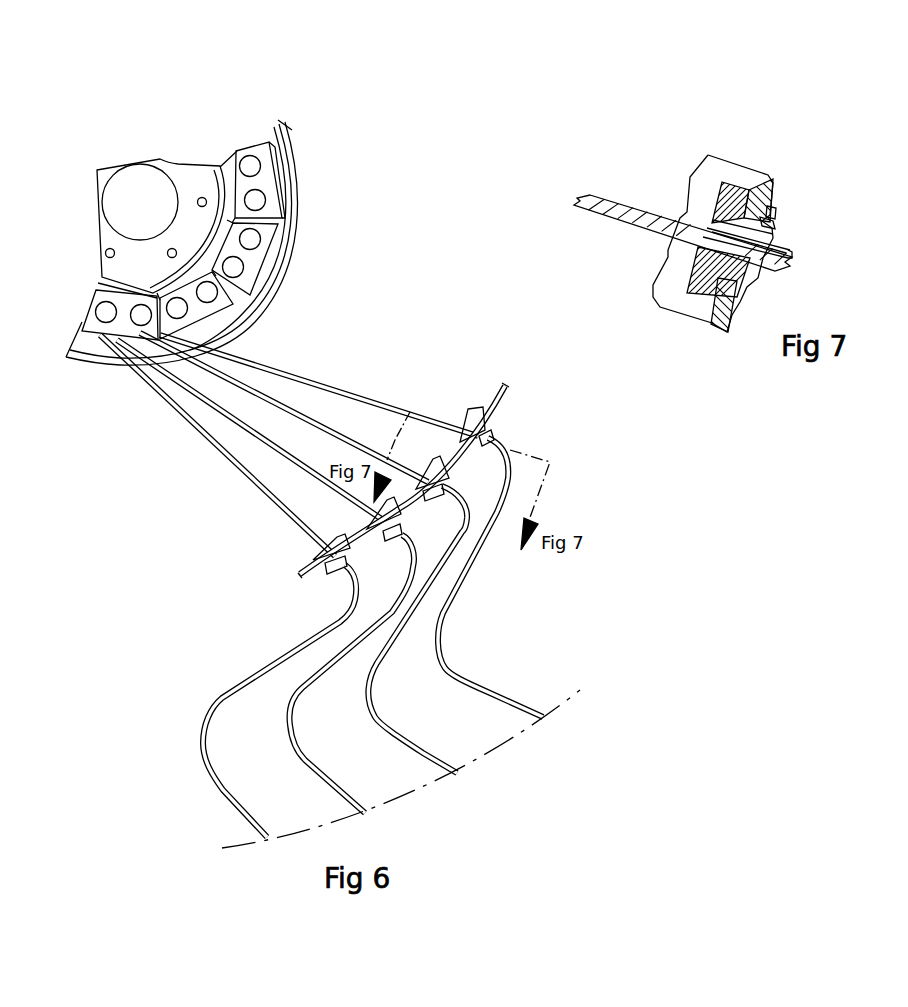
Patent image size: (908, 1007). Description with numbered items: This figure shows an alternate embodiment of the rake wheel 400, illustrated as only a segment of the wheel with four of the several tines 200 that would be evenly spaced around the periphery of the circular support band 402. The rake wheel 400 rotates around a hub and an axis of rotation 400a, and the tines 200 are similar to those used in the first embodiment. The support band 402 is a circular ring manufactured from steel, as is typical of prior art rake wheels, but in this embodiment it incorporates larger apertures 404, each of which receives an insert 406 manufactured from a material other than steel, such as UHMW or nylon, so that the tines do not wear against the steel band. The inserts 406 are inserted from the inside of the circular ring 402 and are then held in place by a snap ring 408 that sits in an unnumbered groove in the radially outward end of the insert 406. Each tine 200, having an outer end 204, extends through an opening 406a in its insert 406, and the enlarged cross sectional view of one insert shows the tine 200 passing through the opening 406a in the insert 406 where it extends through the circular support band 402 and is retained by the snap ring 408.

In FIG. 6, the rake wheel 400 is at (261, 230).
In FIG. 6, the axis of rotation 400a is at (142, 200).
In FIG. 6, the tine 200 is at (302, 367).
In FIG. 7, the tine 200 is at (618, 205).
In FIG. 6, the outer end 204 is at (450, 655).
In FIG. 6, the support band 402 is at (503, 403).
In FIG. 6, the insert 406 is at (473, 407).
In FIG. 7, the insert 406 is at (733, 198).
In FIG. 7, the aperture 404 is at (757, 225).
In FIG. 7, the snap ring 408 is at (772, 220).
In FIG. 7, the opening 406a is at (772, 257).